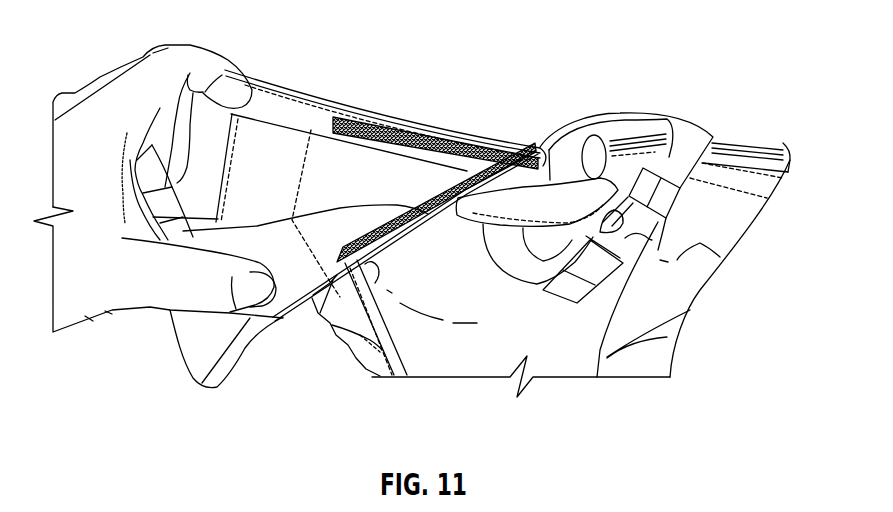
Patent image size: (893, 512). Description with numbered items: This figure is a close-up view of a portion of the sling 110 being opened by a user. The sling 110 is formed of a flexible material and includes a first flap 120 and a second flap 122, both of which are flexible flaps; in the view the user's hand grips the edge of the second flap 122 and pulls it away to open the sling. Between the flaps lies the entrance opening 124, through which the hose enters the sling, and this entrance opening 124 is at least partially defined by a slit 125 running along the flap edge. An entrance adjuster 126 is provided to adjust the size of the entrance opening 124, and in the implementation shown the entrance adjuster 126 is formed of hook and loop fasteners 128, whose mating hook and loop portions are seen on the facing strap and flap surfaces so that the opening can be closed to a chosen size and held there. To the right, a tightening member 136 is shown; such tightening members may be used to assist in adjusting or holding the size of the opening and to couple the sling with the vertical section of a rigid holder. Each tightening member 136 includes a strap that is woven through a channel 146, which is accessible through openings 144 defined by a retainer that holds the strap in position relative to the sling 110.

The sling 110 is at (697, 275).
The first flap 120 is at (462, 358).
The second flap 122 is at (323, 177).
The entrance opening 124 is at (268, 155).
The slit 125 is at (312, 106).
The entrance adjuster 126 is at (447, 145).
The hook and loop fasteners 128 is at (397, 137).
The tightening member 136 is at (688, 123).
The openings 144 is at (578, 124).
The channel 146 is at (608, 117).